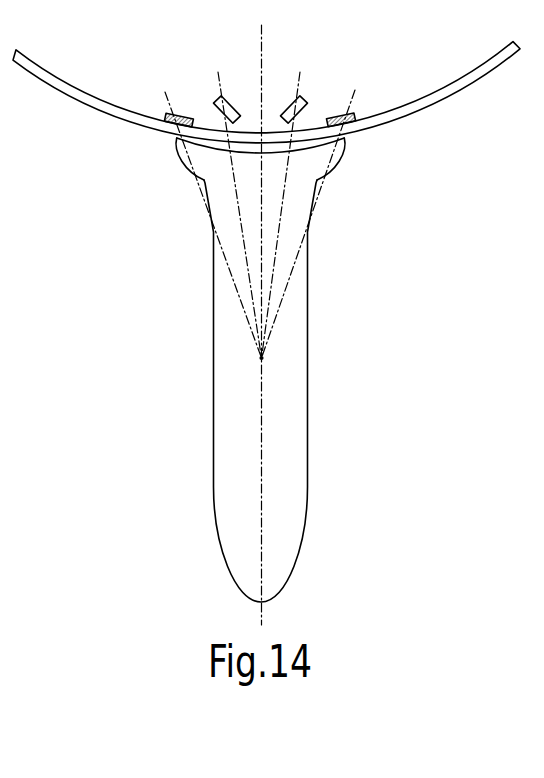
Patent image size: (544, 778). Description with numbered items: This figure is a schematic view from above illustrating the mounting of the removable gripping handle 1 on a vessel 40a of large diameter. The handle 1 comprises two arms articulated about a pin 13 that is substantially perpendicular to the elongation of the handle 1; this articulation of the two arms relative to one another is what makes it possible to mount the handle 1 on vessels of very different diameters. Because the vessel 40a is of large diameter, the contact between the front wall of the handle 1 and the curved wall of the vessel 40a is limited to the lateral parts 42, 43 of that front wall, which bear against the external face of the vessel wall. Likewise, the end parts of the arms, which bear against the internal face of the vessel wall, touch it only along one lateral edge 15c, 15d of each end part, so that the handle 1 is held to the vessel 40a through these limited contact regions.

The handle 1 is at (299, 452).
The pin 13 is at (263, 366).
The lateral edge 15c is at (167, 109).
The lateral edge 15d is at (355, 117).
The vessel 40a is at (462, 87).
The lateral part 42 is at (343, 147).
The lateral part 43 is at (180, 157).